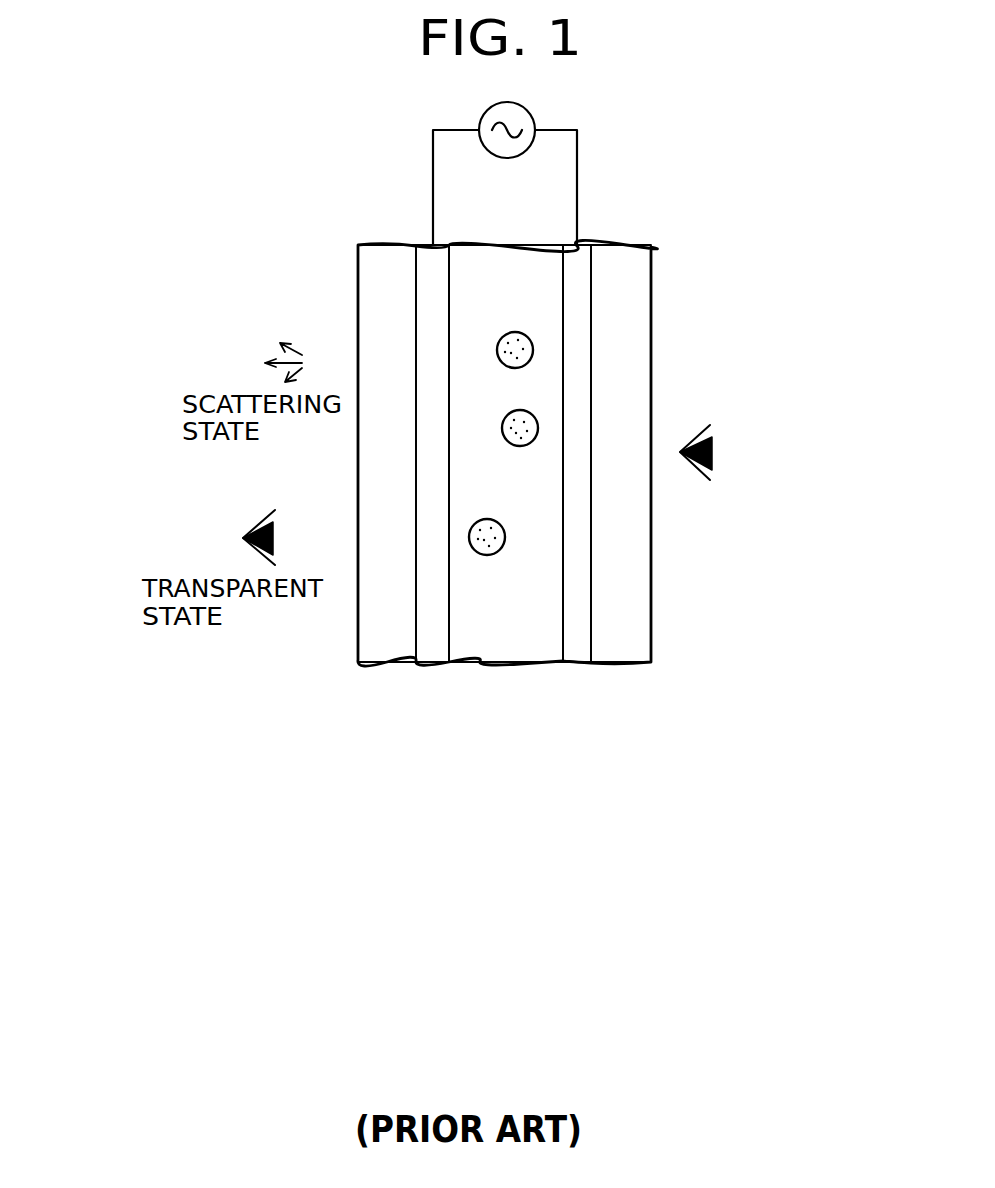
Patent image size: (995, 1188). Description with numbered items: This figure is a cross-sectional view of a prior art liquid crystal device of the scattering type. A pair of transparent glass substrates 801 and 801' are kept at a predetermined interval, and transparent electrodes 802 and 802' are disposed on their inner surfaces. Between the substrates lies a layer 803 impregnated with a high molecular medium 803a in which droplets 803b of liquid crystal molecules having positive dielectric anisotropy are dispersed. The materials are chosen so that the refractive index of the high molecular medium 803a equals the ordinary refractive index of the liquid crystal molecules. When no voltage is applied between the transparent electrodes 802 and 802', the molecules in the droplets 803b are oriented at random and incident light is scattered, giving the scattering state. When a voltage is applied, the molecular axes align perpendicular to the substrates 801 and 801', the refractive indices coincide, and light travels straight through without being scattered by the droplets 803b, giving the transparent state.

The transparent glass substrate 801 is at (675, 453).
The transparent glass substrate 801' is at (359, 489).
The transparent electrode 802 is at (609, 489).
The transparent electrode 802' is at (418, 499).
The layer 803 is at (547, 667).
The high molecular medium 803a is at (482, 647).
The droplets 803b is at (534, 348).